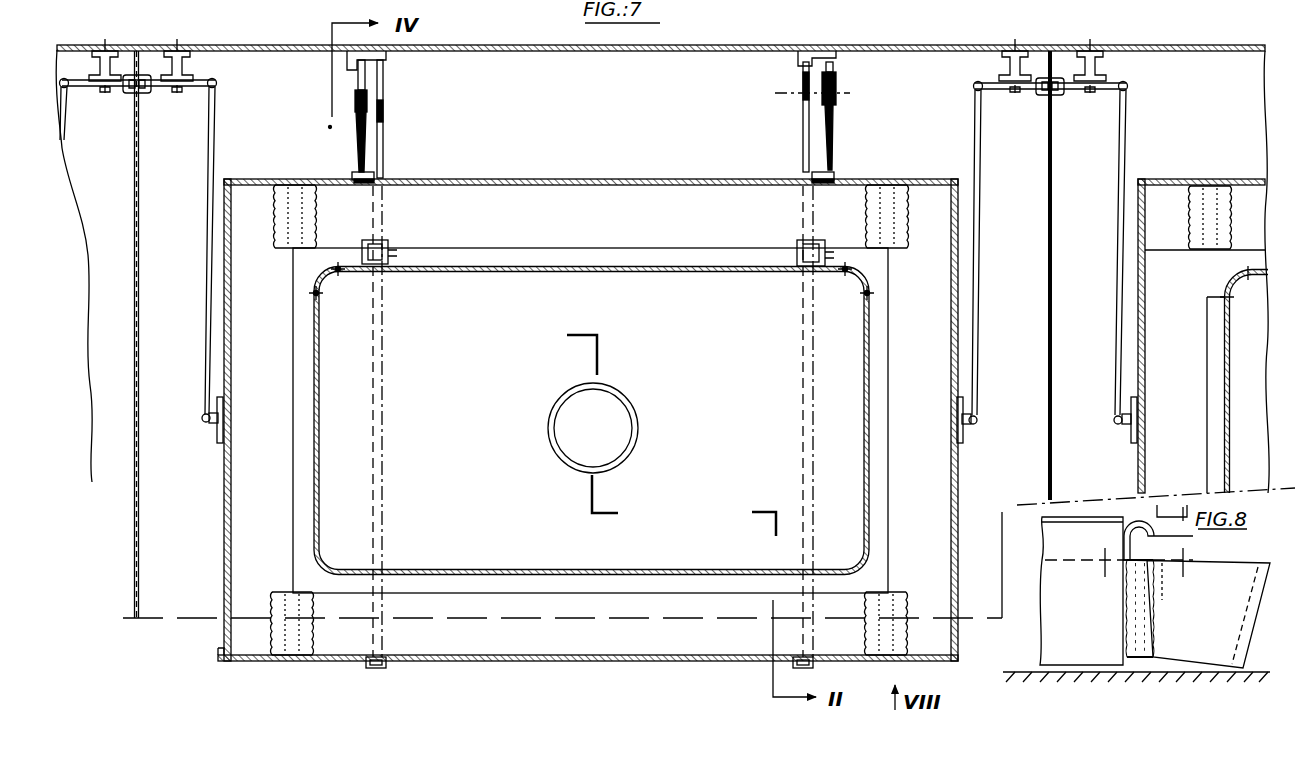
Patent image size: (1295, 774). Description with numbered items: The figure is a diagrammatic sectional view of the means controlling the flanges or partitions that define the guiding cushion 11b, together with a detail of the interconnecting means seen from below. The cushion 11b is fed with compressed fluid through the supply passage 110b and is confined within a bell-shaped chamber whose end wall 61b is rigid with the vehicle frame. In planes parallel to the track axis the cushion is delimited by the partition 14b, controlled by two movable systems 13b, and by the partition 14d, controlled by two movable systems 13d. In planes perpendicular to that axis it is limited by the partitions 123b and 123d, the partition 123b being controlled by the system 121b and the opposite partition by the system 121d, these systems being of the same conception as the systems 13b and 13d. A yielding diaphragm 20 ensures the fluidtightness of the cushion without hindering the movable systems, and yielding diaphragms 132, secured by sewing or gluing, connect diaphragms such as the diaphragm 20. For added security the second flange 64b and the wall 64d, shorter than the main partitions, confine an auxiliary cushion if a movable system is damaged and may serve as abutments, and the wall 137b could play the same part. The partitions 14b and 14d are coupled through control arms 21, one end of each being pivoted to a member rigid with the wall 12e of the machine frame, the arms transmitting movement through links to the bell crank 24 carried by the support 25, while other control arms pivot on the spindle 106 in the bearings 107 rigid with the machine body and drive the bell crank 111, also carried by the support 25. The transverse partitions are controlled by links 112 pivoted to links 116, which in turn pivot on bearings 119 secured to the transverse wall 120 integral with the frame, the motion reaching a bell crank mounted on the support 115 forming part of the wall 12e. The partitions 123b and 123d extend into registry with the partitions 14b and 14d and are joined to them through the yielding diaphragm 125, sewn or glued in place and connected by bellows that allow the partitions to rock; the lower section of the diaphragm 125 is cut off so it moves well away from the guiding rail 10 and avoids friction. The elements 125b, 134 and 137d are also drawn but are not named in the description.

In FIG. 8, the guiding rail 10 is at (1095, 680).
In FIG. 7, the guiding cushion 11b is at (503, 435).
In FIG. 7, the wall 12e is at (885, 45).
In FIG. 7, the movable system 13b is at (347, 171).
In FIG. 7, the movable system 13d is at (390, 671).
In FIG. 7, the flange or partition 14b is at (511, 179).
In FIG. 7, the flange or partition 14d is at (600, 661).
In FIG. 7, the yielding diaphragm 20 is at (699, 228).
In FIG. 7, the control arm 21 is at (356, 140).
In FIG. 7, the bell crank 24 is at (354, 101).
In FIG. 7, the support 25 is at (433, 45).
In FIG. 7, the end wall 61b is at (158, 598).
In FIG. 7, the second flange 64b is at (556, 266).
In FIG. 7, the wall 64d is at (562, 568).
In FIG. 7, the spindle 106 is at (386, 243).
In FIG. 7, the bearing 107 is at (397, 254).
In FIG. 7, the supply passage 110b is at (628, 435).
In FIG. 7, the bell crank 111 is at (386, 84).
In FIG. 7, the link 112 is at (202, 255).
In FIG. 7, the support 115 is at (1067, 50).
In FIG. 7, the link 116 is at (998, 92).
In FIG. 7, the bearing 119 is at (1043, 96).
In FIG. 7, the transverse wall 120 is at (135, 212).
In FIG. 7, the movable system 121b is at (978, 428).
In FIG. 7, the movable system 121d is at (203, 426).
In FIG. 7, the flange or partition 123b is at (958, 497).
In FIG. 7, the flange or partition 123d is at (226, 535).
In FIG. 7, the yielding diaphragm 125 is at (258, 179).
In FIG. 8, the yielding diaphragm 125 is at (1242, 583).
In FIG. 7, the bellows 125b is at (888, 186).
In FIG. 8, the bellows 125b is at (1153, 637).
In FIG. 7, the yielding diaphragm 132 is at (290, 242).
In FIG. 8, the yielding diaphragm 132 is at (1162, 570).
In FIG. 7, the pin 134 is at (322, 293).
In FIG. 7, the wall 137b is at (864, 420).
In FIG. 7, the left inner wall 137d is at (327, 432).